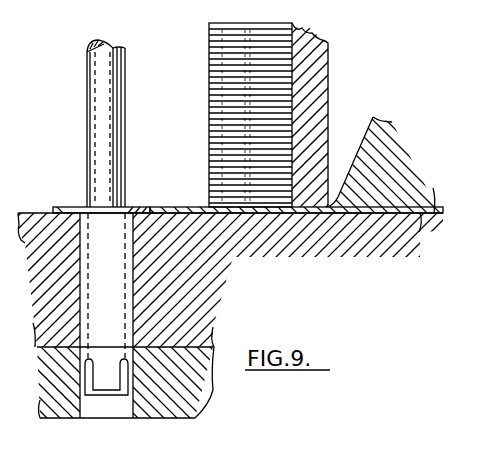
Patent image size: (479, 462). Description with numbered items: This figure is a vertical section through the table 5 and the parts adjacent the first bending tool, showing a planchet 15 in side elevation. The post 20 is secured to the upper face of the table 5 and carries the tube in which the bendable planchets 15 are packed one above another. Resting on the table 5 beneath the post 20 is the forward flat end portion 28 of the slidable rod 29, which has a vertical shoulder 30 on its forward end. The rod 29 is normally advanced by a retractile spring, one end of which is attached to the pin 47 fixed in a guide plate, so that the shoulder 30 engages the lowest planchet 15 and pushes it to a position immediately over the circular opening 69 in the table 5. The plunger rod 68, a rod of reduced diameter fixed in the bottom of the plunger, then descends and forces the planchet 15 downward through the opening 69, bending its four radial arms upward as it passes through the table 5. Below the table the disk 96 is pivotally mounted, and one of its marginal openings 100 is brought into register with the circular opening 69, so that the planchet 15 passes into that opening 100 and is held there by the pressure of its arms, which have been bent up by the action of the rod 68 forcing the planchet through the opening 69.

The table 5 is at (0, 22).
The planchet 15 is at (102, 207).
The post 20 is at (320, 63).
The forward flat end portion 28 is at (190, 208).
The slidable rod 29 is at (378, 177).
The vertical shoulder 30 is at (360, 153).
The pin 47 is at (90, 370).
The plunger rod 68 is at (95, 88).
The circular opening 69 is at (80, 280).
The disk 96 is at (62, 408).
The marginal opening 100 is at (128, 405).